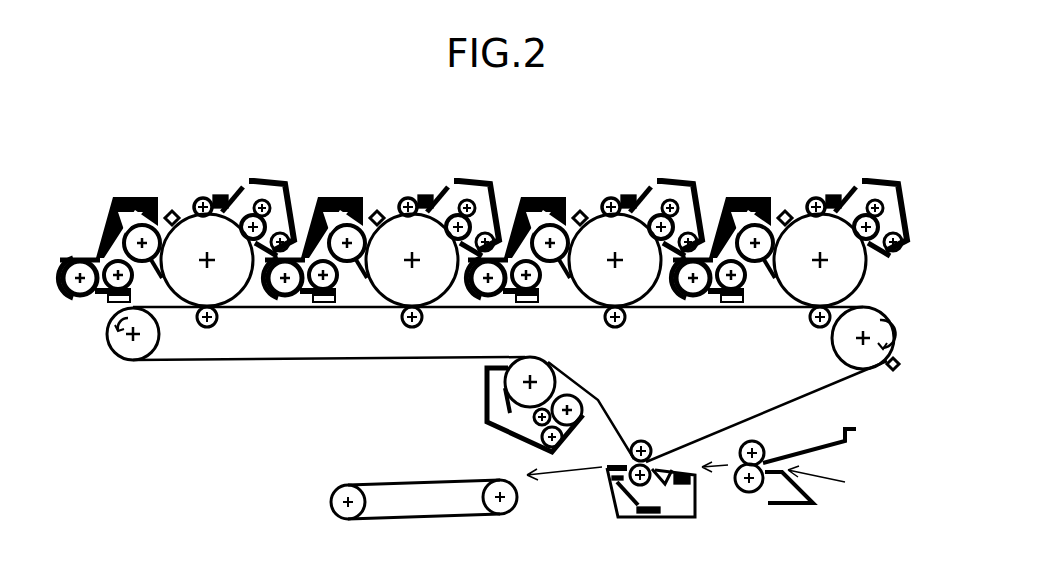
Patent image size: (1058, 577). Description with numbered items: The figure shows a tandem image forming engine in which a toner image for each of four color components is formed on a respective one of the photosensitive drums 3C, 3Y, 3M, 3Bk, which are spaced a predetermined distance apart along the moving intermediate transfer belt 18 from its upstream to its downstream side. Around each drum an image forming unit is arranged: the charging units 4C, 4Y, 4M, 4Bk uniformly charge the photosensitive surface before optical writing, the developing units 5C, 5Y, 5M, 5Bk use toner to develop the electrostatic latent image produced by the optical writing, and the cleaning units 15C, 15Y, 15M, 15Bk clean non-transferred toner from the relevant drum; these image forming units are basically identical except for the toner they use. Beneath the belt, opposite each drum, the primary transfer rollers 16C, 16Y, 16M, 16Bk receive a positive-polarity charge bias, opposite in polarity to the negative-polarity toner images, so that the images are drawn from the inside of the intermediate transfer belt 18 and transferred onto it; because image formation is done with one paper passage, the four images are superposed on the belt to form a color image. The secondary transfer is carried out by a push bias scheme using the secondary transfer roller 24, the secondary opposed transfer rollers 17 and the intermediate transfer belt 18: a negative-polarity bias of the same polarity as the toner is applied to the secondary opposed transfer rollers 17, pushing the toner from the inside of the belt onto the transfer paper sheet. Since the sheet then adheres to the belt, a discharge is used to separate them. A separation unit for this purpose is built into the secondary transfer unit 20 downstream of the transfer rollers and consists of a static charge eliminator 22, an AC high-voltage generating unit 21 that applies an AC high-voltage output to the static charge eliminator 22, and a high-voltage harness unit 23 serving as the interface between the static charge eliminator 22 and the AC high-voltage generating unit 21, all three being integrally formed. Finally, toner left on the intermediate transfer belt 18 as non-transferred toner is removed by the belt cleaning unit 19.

The photosensitive drum 3C is at (201, 220).
The photosensitive drum 3Y is at (407, 220).
The photosensitive drum 3M is at (608, 219).
The photosensitive drum 3Bk is at (810, 216).
The charging unit 4C is at (208, 181).
The charging unit 4Y is at (413, 181).
The charging unit 4M is at (613, 182).
The charging unit 4Bk is at (819, 179).
The developing unit 5C is at (110, 213).
The developing unit 5Y is at (315, 213).
The developing unit 5M is at (518, 214).
The developing unit 5Bk is at (723, 214).
The cleaning unit 15C is at (258, 189).
The cleaning unit 15Y is at (463, 189).
The cleaning unit 15M is at (666, 190).
The cleaning unit 15Bk is at (871, 190).
The primary transfer roller 16C is at (222, 330).
The primary transfer roller 16Y is at (383, 328).
The primary transfer roller 16M is at (599, 335).
The primary transfer roller 16Bk is at (802, 335).
The secondary opposed transfer roller 17 is at (642, 440).
The intermediate transfer belt 18 is at (202, 358).
The belt cleaning unit 19 is at (485, 410).
The secondary transfer unit 20 is at (659, 496).
The AC high-voltage generating unit 21 is at (653, 515).
The static charge eliminator 22 is at (618, 470).
The high-voltage harness unit 23 is at (627, 492).
The secondary transfer roller 24 is at (653, 466).